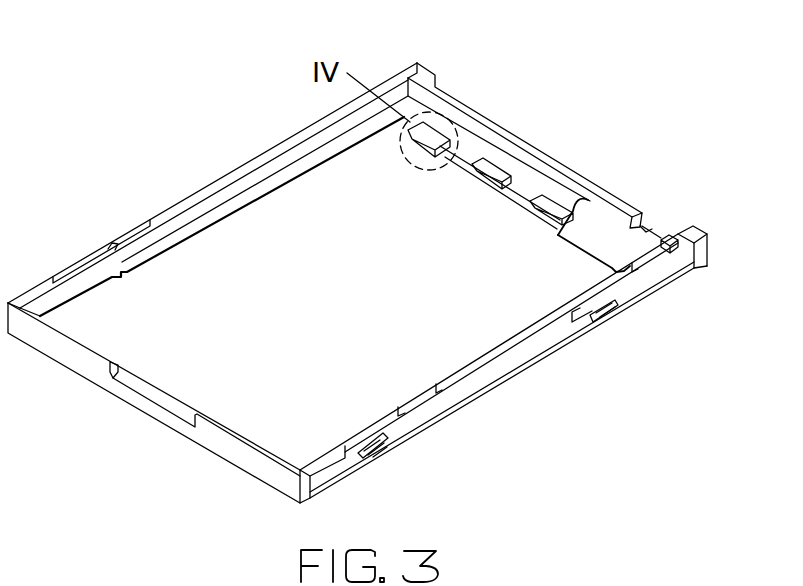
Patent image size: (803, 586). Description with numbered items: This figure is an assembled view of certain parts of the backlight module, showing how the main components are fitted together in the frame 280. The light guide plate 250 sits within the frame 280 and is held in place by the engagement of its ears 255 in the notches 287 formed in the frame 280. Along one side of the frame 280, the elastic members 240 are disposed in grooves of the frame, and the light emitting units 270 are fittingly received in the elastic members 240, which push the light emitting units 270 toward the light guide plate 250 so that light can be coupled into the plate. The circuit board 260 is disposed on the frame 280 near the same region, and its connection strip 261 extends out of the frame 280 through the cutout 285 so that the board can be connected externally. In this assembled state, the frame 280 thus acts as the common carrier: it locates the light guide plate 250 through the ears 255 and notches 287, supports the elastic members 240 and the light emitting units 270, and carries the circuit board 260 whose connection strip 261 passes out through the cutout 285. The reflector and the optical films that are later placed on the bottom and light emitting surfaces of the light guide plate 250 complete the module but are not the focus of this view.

The elastic member 240 is at (480, 165).
The light guide plate 250 is at (207, 262).
The ear 255 is at (90, 262).
The circuit board 260 is at (587, 228).
The connection strip 261 is at (690, 225).
The light emitting unit 270 is at (490, 179).
The frame 280 is at (456, 92).
The cutout 285 is at (646, 226).
The notch 287 is at (112, 244).